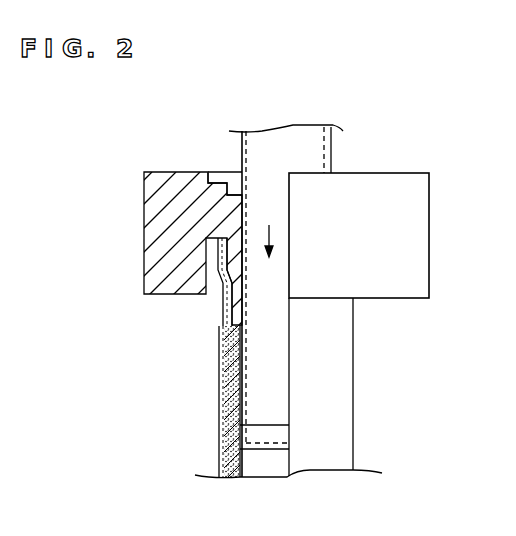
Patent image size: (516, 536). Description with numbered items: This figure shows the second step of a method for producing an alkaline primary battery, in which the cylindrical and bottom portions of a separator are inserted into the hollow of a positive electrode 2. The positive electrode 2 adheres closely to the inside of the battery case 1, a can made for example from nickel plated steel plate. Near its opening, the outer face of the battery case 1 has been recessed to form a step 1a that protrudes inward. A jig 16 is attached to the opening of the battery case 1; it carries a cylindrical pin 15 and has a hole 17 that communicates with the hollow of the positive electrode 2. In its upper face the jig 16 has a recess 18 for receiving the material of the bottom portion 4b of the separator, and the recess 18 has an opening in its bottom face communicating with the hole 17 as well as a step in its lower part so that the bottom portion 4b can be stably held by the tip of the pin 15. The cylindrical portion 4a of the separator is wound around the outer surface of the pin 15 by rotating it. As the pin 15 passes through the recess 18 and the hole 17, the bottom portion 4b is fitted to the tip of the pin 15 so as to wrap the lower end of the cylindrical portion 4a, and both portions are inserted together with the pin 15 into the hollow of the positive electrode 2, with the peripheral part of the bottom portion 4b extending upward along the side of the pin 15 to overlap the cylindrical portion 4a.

The battery case 1 is at (218, 363).
The step 1a is at (227, 287).
The positive electrode 2 is at (218, 416).
The cylindrical portion of the separator 4a is at (258, 381).
The bottom portion of the separator 4b is at (218, 438).
The pin 15 is at (312, 155).
The jig 16 is at (160, 233).
The hole 17 is at (240, 205).
The recess 18 is at (228, 178).